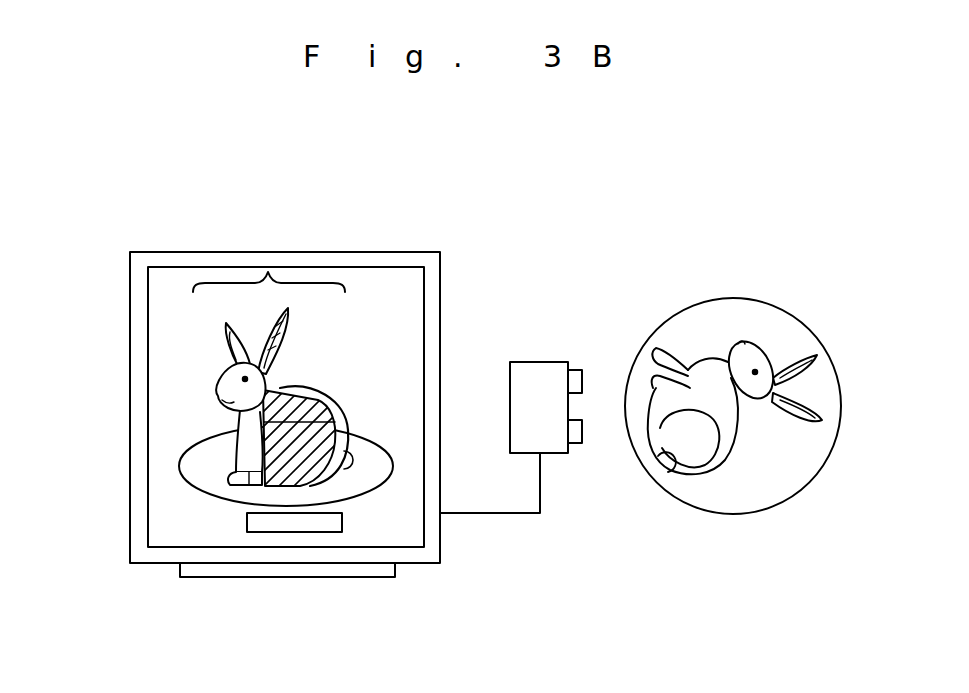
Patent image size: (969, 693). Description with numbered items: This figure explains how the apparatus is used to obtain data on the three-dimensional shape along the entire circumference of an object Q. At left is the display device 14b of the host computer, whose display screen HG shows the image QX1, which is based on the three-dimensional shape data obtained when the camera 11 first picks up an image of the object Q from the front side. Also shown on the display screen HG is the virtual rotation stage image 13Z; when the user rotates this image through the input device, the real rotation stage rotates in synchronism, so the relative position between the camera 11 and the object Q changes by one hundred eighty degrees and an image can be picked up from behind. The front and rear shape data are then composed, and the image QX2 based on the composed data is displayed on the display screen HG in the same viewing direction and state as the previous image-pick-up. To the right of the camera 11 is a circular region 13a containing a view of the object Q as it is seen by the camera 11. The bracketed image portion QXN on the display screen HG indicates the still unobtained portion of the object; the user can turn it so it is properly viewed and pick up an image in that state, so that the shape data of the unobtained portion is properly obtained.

The display device 14b is at (130, 292).
The display screen HG is at (377, 287).
The virtual rotation stage image 13Z is at (198, 490).
The image based on composed three-dimensional shape data QX2 is at (268, 272).
The image based on three-dimensional shape data from the front QX1 is at (218, 392).
The partial image N of body QXN (QZN) QXN is at (292, 468).
The camera 11 is at (535, 368).
The captured image area 13a is at (772, 322).
The object Q is at (705, 457).